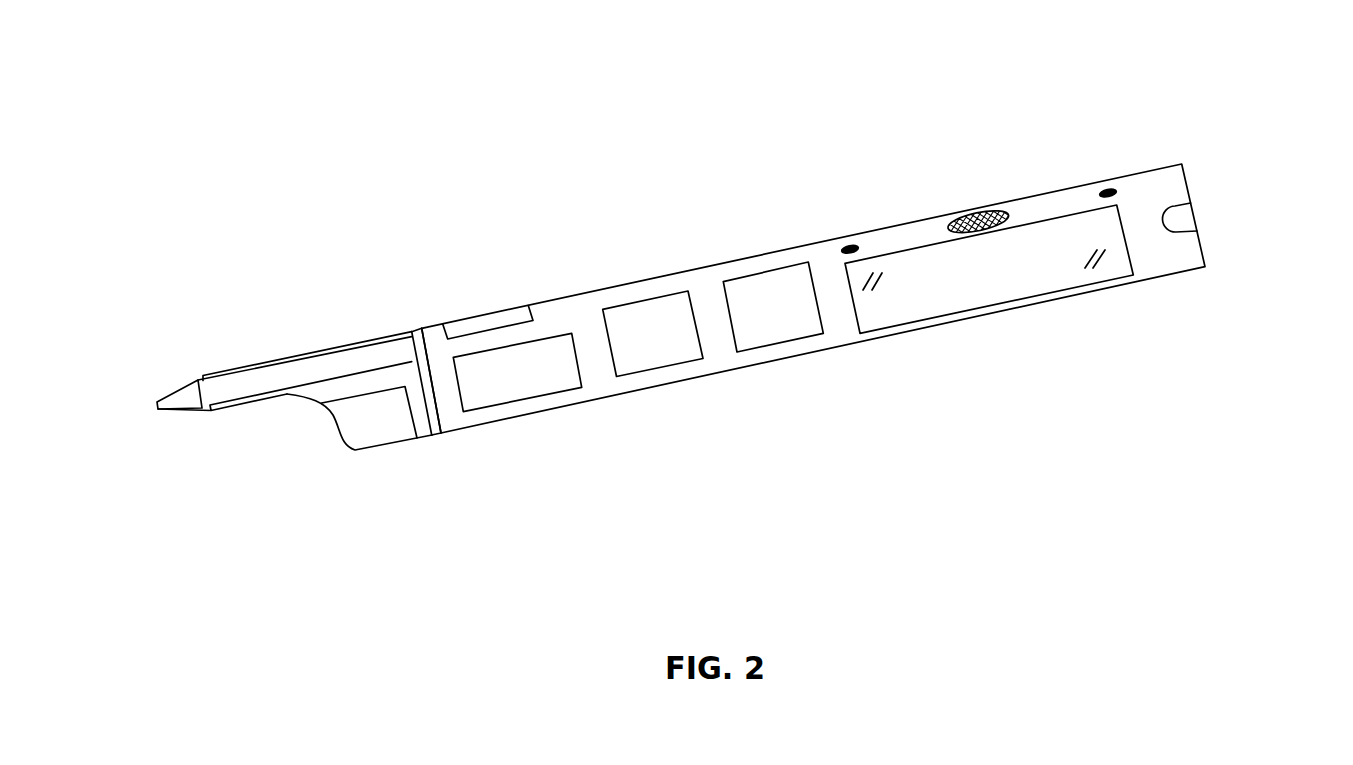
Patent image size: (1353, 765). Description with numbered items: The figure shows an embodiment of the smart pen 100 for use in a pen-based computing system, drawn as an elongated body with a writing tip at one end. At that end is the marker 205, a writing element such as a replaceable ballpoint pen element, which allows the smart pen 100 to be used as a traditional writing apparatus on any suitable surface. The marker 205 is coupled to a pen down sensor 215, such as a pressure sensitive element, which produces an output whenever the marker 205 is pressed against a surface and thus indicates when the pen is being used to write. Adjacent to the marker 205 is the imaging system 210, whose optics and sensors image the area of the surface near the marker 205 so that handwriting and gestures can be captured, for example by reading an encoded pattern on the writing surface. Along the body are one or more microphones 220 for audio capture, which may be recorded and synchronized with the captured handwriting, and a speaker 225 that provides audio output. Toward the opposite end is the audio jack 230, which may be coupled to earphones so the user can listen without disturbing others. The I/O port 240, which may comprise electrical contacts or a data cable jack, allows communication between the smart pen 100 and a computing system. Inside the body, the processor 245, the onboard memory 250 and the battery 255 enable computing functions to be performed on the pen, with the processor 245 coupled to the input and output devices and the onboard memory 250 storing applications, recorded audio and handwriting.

The smart pen 100 is at (607, 92).
The marker 205 is at (158, 406).
The imaging system 210 is at (354, 434).
The pen down sensor 215 is at (435, 435).
The microphones 220 is at (859, 244).
The speaker 225 is at (977, 212).
The audio jack 230 is at (1187, 218).
The I/O port 240 is at (503, 310).
The processor 245 is at (792, 320).
The onboard memory 250 is at (635, 348).
The battery 255 is at (495, 386).